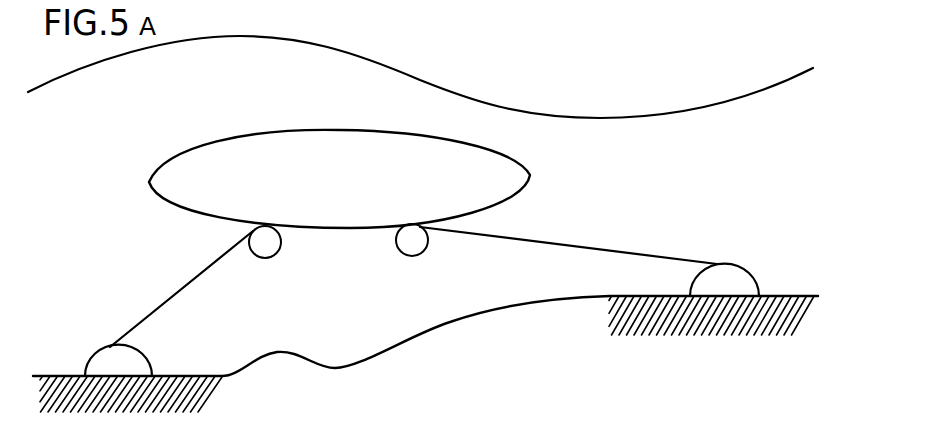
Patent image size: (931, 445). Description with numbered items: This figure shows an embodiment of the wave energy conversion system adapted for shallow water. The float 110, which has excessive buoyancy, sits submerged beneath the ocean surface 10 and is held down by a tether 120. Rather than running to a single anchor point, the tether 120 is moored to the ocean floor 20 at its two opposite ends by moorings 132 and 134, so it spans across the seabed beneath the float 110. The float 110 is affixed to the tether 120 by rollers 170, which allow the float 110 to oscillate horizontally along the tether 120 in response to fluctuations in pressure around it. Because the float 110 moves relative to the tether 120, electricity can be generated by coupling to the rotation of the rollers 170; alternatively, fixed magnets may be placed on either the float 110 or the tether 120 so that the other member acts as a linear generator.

The ocean surface 10 is at (390, 66).
The ocean floor 20 is at (452, 320).
The float 110 is at (150, 177).
The tether 120 is at (562, 232).
The mooring 132 is at (84, 370).
The mooring 134 is at (738, 270).
The rollers 170 is at (398, 255).